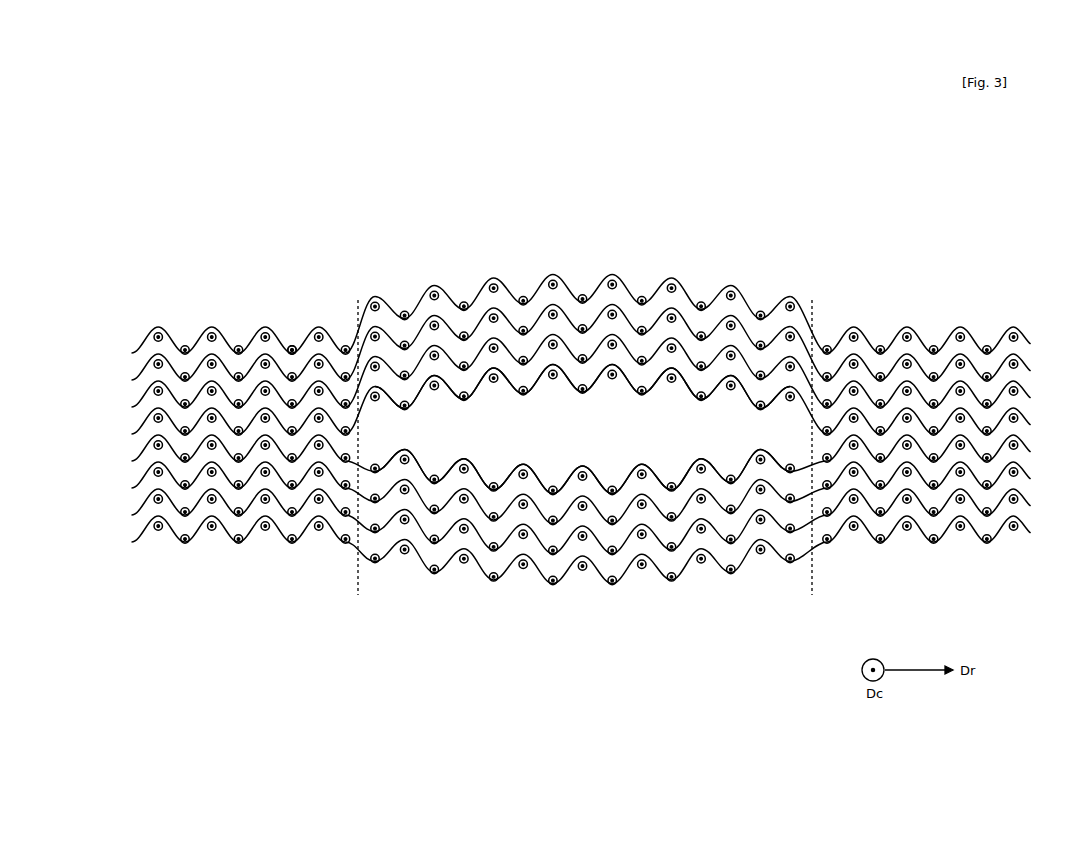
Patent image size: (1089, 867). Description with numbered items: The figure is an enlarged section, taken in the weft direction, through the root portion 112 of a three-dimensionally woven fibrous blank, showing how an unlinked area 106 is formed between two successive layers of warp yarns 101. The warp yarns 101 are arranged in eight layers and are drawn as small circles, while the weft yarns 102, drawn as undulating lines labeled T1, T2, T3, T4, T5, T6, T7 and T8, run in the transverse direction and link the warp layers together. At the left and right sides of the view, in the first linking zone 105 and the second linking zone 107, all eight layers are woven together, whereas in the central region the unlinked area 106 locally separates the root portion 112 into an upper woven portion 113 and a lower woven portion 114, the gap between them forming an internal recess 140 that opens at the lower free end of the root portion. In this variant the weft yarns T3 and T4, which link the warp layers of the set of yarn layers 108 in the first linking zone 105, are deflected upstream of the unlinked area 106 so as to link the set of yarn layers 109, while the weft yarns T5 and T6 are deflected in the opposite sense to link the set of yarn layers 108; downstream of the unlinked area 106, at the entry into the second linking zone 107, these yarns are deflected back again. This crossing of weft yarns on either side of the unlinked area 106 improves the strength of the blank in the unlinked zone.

The warp yarns 101 is at (316, 330).
The weft yarns 102 is at (198, 346).
The first linking zone 105 is at (231, 455).
The unlinked area 106 is at (587, 436).
The internal recess 140 is at (582, 429).
The second linking zone 107 is at (943, 443).
The set of yarn layers 108 is at (1037, 335).
The set of yarn layers 109 is at (1037, 437).
The root portion 112 is at (882, 229).
The woven portion 113 is at (595, 297).
The woven portion 114 is at (541, 537).
The weft yarn T1 is at (139, 342).
The weft yarn T2 is at (139, 369).
The weft yarn T3 is at (139, 396).
The weft yarn T4 is at (139, 423).
The weft yarn T5 is at (139, 450).
The weft yarn T6 is at (139, 477).
The weft yarn T7 is at (139, 504).
The weft yarn T8 is at (139, 531).